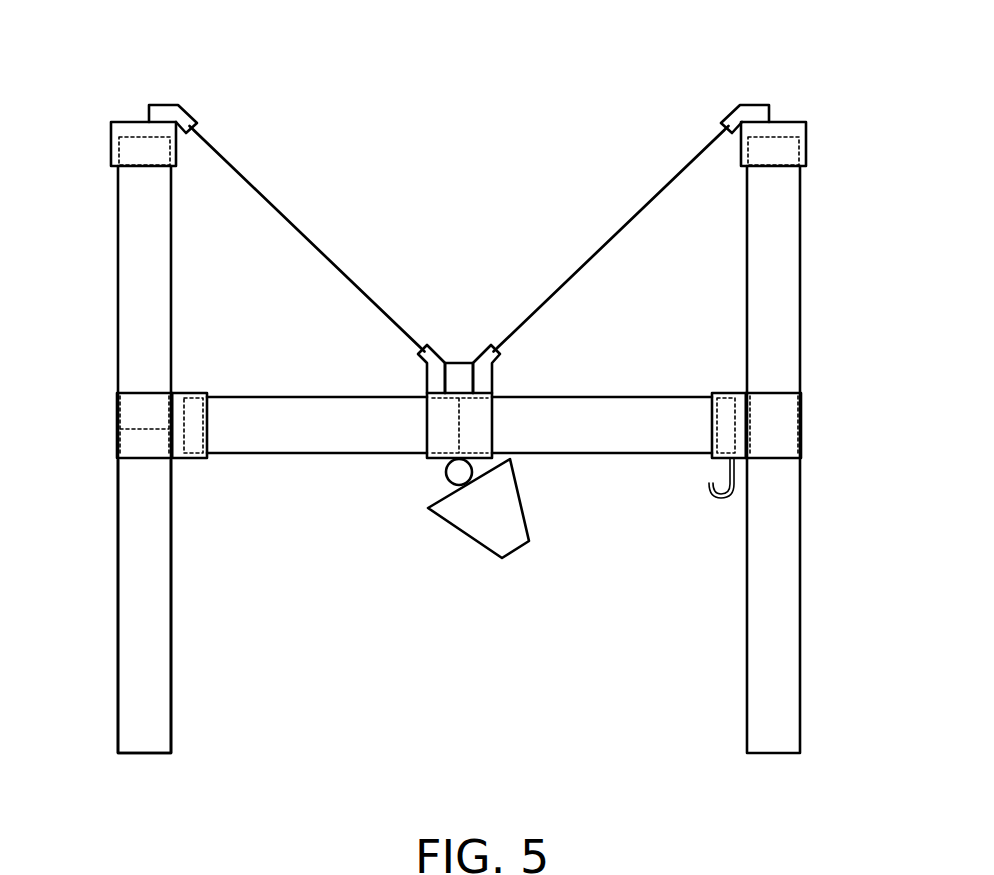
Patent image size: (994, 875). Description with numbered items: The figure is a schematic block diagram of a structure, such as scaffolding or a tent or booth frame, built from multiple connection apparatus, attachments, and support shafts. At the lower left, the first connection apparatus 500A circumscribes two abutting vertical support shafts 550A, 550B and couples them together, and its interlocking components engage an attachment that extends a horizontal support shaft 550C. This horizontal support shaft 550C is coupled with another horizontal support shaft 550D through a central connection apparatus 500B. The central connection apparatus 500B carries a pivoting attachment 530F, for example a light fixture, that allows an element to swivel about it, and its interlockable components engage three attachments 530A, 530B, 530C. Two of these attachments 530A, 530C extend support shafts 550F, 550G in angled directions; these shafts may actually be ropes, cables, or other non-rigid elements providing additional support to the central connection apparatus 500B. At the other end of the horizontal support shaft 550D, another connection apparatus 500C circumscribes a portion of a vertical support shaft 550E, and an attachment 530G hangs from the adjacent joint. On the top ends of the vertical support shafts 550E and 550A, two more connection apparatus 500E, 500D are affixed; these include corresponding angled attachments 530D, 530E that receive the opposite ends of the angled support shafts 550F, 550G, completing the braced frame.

The first connection apparatus 500A is at (145, 412).
The connection apparatus 500B is at (440, 437).
The connection apparatus 500C is at (787, 428).
The connection apparatus 500D is at (124, 127).
The connection apparatus 500E is at (796, 127).
The attachment 530A is at (440, 365).
The attachment 530B is at (460, 370).
The attachment 530C is at (480, 370).
The angled attachment 530D is at (168, 114).
The angled attachment 530E is at (740, 113).
The pivoting attachment 530F is at (455, 473).
The attachment 530G is at (708, 497).
The vertical support shaft 550A is at (146, 268).
The vertical support shaft 550B is at (146, 613).
The horizontal support shaft 550C is at (311, 427).
The horizontal support shaft 550D is at (665, 419).
The support shaft 550E is at (771, 268).
The angled support shaft 550F is at (300, 218).
The angled support shaft 550G is at (605, 218).